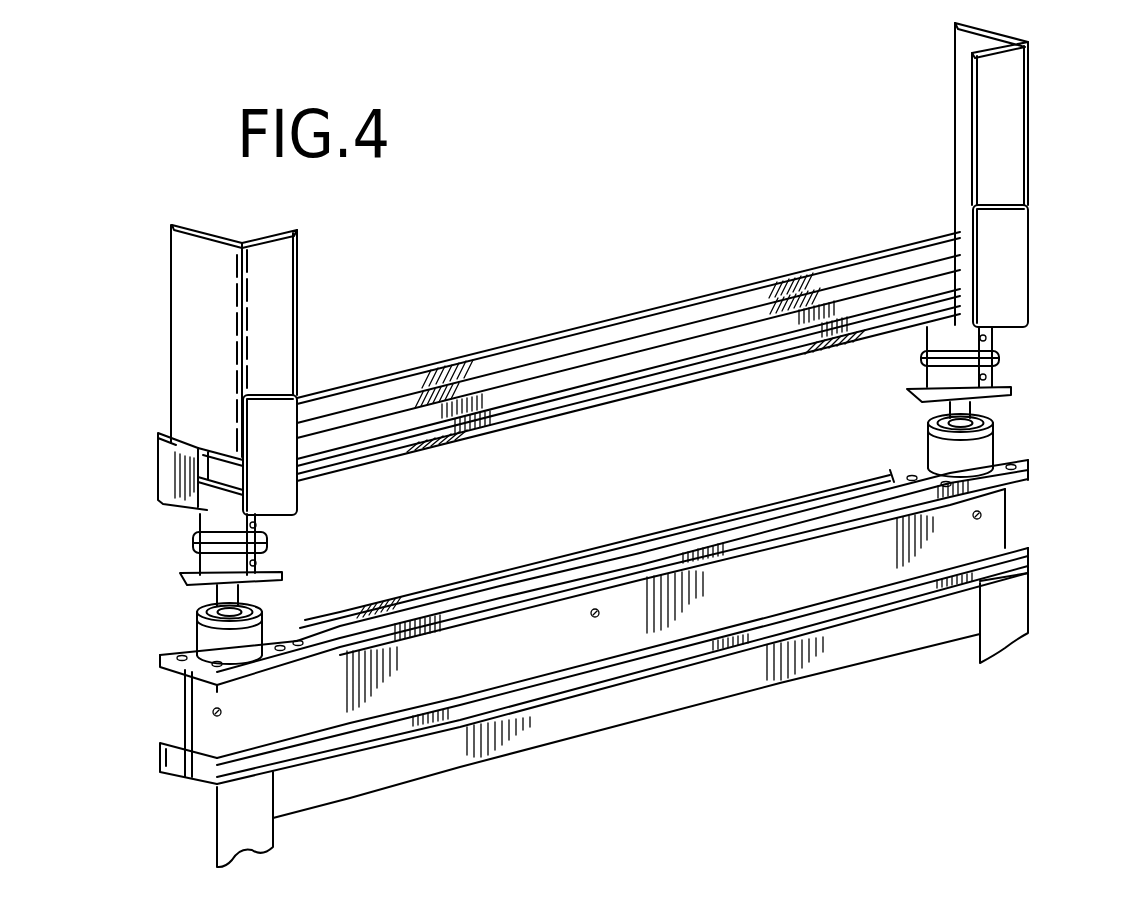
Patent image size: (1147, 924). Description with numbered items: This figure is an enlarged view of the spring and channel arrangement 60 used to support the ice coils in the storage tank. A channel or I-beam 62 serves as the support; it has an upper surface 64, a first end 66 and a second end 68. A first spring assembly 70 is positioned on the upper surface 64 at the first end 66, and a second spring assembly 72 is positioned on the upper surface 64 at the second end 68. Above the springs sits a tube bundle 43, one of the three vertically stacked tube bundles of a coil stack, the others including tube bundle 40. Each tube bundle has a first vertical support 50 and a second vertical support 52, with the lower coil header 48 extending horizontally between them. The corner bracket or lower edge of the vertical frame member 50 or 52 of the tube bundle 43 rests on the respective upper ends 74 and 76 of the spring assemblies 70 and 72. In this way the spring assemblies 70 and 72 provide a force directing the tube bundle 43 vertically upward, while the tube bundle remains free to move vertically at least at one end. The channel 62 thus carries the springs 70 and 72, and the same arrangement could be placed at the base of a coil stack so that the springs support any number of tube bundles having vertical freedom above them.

The tube bundle 43 is at (166, 302).
The first vertical support 50 is at (186, 393).
The second vertical support 52 is at (1003, 162).
The lower coil header 48 is at (180, 477).
The upper end of first spring assembly 74 is at (200, 510).
The upper end of second spring assembly 76 is at (935, 340).
The first spring assembly 70 is at (274, 607).
The second spring assembly 72 is at (916, 441).
The spring and channel arrangement 60 is at (1118, 391).
The tube bundle 40 is at (618, 651).
The channel or I-beam 62 is at (1018, 527).
The upper surface 64 is at (842, 485).
The first end 66 is at (185, 668).
The second end 68 is at (1032, 463).